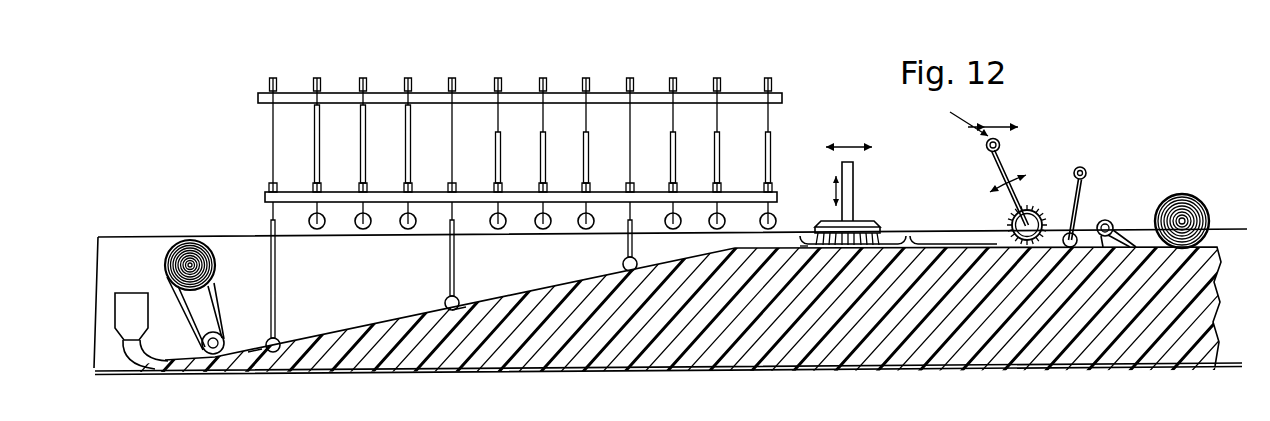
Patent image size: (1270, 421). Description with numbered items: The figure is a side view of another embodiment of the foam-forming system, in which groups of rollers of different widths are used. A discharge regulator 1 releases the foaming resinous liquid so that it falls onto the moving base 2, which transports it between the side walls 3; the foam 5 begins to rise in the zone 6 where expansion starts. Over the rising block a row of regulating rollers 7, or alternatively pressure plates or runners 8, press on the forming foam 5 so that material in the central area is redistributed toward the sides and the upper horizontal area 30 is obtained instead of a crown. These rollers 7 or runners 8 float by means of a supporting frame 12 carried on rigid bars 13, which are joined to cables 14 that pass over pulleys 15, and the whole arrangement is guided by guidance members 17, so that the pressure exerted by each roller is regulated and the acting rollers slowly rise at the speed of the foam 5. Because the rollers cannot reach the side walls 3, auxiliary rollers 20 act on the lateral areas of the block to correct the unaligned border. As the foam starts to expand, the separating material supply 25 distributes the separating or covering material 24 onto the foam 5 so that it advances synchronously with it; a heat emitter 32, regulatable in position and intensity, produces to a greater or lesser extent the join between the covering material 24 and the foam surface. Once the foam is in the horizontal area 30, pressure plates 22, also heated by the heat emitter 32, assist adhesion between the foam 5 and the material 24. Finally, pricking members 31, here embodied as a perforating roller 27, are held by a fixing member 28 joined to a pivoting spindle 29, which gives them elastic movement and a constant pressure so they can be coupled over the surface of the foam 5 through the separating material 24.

The discharge regulator 1 is at (130, 305).
The moving base 2 is at (347, 372).
The side walls 3 is at (237, 244).
The foam 5 is at (637, 318).
The zone where expansion starts 6 is at (255, 358).
The regulating rollers 7 is at (320, 229).
The pressure plates or runners 8 is at (778, 101).
The supporting frame 12 is at (777, 200).
The rigid bars 13 is at (272, 246).
The cable 14 is at (274, 120).
The pulleys 15 is at (367, 84).
The guidance members 17 is at (268, 186).
The auxiliary rollers 20 is at (1098, 223).
The pressure plates 22 is at (914, 244).
The separating or covering material 24 is at (193, 330).
The separating material supply 25 is at (188, 245).
The perforating roller 27 is at (1037, 207).
The fixing member 28 is at (1004, 166).
The pivoting spindle 29 is at (970, 119).
The upper horizontal area 30 is at (802, 246).
The pricking members 31 is at (1076, 205).
The heat emitter 32 is at (865, 228).